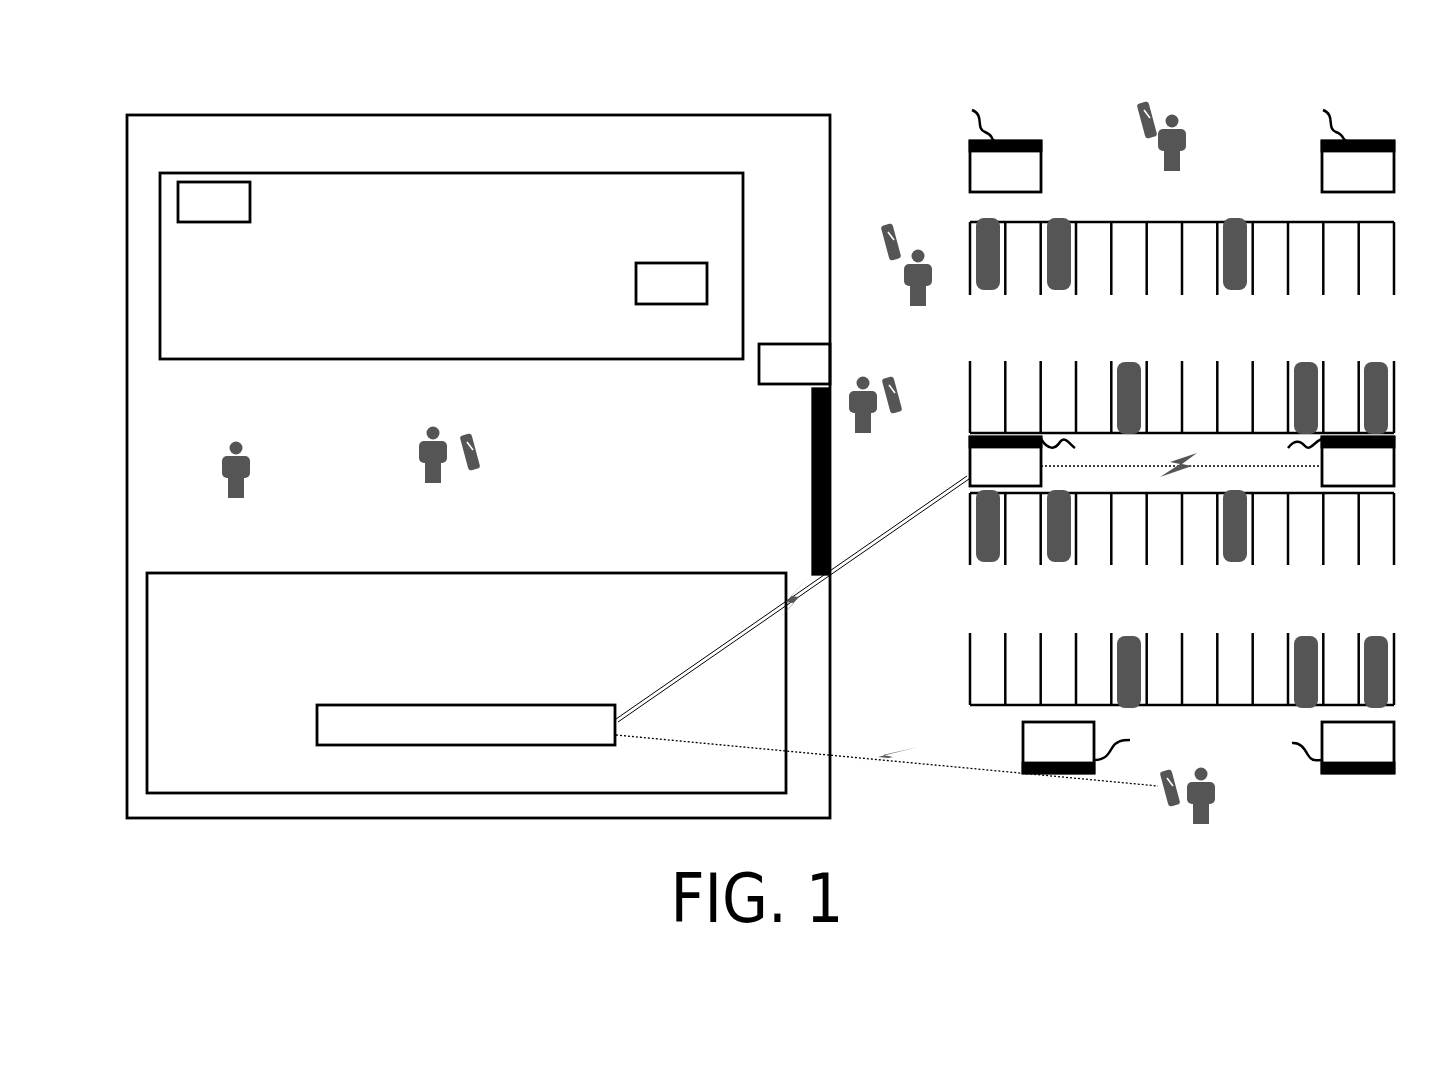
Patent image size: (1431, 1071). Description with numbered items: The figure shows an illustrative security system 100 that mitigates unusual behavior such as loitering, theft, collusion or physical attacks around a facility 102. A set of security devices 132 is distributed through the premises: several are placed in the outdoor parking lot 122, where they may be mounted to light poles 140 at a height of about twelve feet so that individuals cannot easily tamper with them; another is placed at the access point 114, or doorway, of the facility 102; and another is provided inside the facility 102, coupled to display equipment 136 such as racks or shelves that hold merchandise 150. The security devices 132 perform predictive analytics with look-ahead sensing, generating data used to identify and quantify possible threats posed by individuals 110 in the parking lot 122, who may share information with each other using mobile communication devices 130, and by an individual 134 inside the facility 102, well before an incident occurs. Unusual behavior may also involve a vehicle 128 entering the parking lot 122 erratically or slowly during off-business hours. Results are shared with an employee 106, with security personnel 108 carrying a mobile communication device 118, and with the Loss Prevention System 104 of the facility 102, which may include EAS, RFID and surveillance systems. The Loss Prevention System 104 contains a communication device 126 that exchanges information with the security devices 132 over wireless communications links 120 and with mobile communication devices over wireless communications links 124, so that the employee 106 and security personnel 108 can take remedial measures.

The security system 100 is at (262, 76).
The facility 102 is at (478, 466).
The Loss Prevention System 104 is at (466, 683).
The employee 106 is at (443, 483).
The security personnel 108 is at (1200, 823).
The individuals 110 is at (1019, 292).
The access point 114 is at (805, 491).
The mobile communication device 118 is at (1154, 792).
The wireless communications links 120 is at (792, 599).
The parking lot 122 is at (913, 84).
The wireless communications links 124 is at (887, 750).
The communication device 126 is at (819, 594).
The vehicle 128 is at (1182, 463).
The mobile communication devices 130 is at (996, 257).
The security devices 132 is at (786, 457).
The individual 134 is at (237, 486).
The display equipment 136 is at (451, 266).
The light poles 140 is at (1146, 425).
The merchandise 150 is at (671, 283).